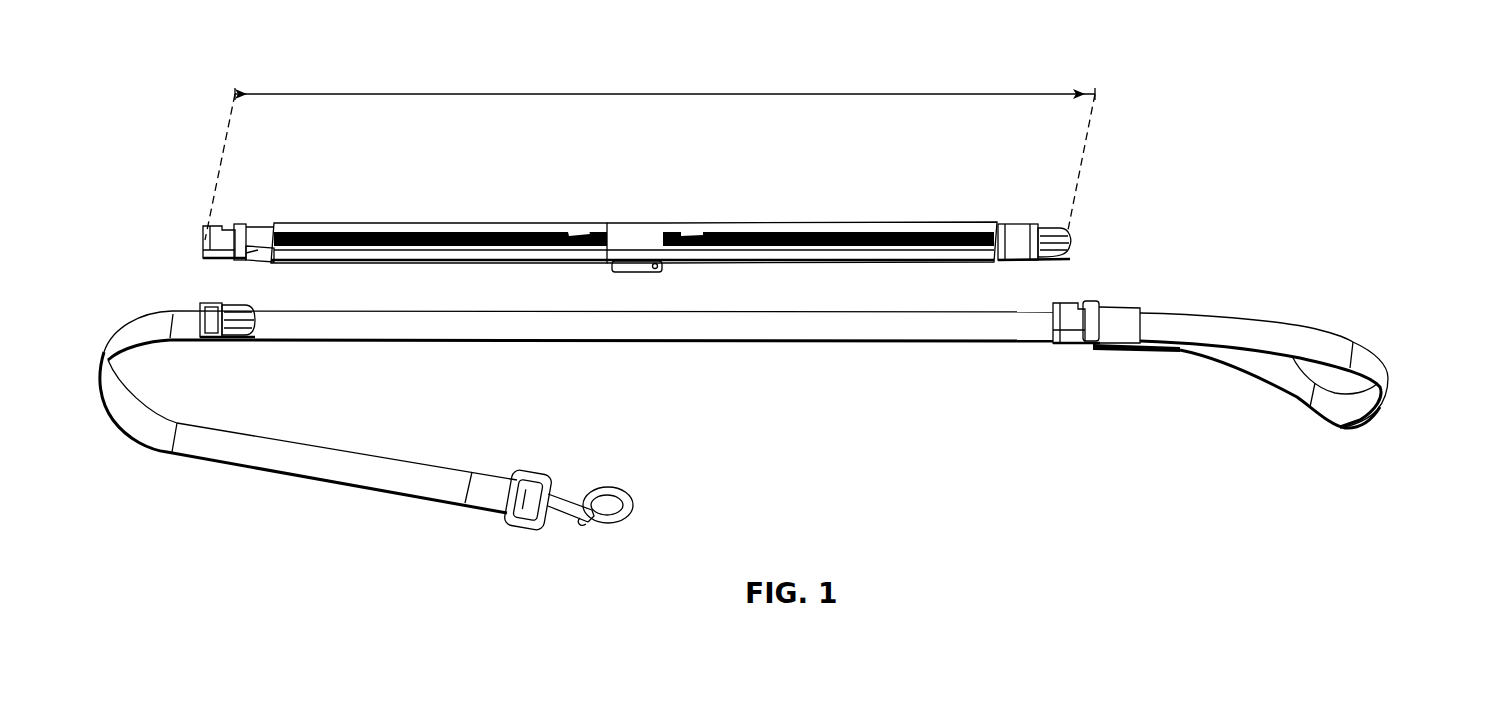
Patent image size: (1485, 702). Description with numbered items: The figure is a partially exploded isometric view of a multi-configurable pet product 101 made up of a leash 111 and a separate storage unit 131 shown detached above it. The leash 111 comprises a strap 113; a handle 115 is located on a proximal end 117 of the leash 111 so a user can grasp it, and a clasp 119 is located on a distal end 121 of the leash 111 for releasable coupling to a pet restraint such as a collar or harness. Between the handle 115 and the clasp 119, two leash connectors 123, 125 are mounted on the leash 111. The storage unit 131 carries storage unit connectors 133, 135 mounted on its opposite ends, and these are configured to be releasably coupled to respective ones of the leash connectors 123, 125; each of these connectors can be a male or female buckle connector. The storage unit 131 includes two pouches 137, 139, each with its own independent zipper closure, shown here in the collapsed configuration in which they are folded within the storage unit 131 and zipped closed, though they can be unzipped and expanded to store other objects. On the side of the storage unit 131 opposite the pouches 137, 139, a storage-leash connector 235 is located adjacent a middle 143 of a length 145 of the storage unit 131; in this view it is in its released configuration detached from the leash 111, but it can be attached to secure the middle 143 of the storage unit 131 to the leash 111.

The pet product 101 is at (1218, 44).
The leash 111 is at (1400, 341).
The strap 113 is at (872, 343).
The handle 115 is at (1343, 428).
The proximal end 117 is at (1124, 367).
The clasp 119 is at (625, 495).
The distal end 121 is at (560, 456).
The leash connector 123 is at (1080, 303).
The leash connector 125 is at (208, 304).
The storage unit 131 is at (1085, 240).
The storage unit connector 133 is at (1018, 223).
The storage unit connector 135 is at (204, 242).
The pouch 137 is at (778, 213).
The pouch 139 is at (363, 205).
The middle 143 is at (621, 207).
The length 145 is at (608, 93).
The storage-leash connector 235 is at (633, 273).